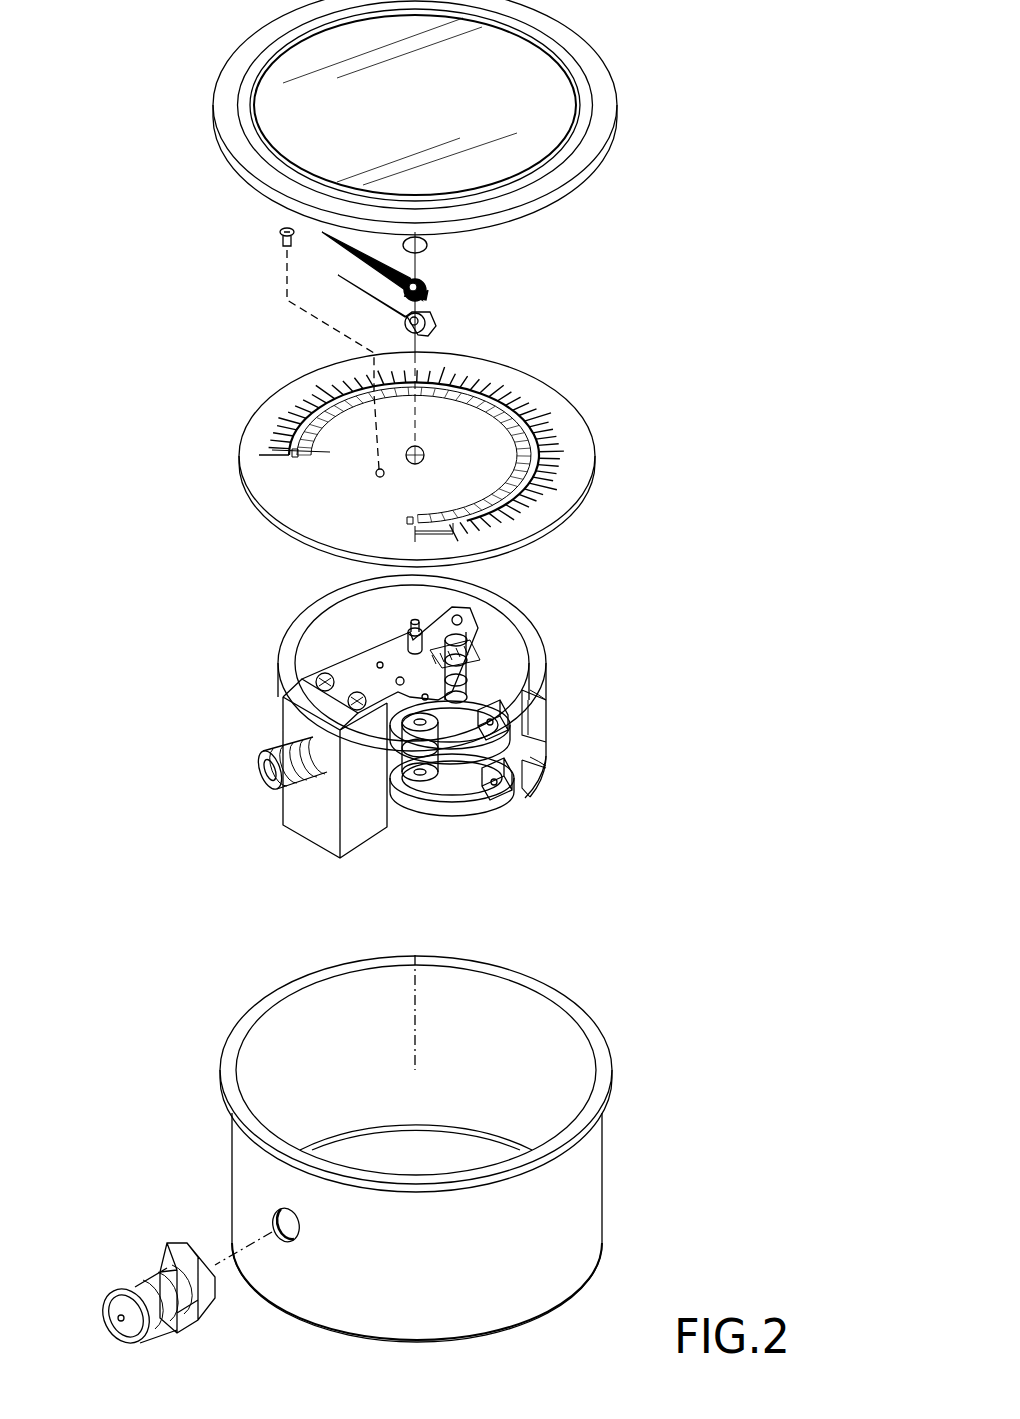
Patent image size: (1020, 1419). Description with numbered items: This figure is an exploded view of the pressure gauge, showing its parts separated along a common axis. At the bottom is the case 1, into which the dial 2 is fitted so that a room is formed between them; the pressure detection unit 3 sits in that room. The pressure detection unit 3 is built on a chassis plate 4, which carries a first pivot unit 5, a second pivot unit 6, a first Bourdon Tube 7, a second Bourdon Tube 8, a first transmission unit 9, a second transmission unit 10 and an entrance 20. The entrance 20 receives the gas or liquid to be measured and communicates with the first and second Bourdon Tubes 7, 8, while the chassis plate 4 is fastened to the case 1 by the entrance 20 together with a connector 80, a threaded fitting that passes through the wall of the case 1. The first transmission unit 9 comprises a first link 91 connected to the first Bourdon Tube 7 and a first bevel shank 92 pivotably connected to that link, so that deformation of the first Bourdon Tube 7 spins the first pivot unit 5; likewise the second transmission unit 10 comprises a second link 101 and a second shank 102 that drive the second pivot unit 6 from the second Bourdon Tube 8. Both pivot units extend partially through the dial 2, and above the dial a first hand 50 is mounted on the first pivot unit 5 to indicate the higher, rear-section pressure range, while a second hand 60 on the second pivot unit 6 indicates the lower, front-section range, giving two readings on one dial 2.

The case 1 is at (612, 1130).
The dial 2 is at (540, 390).
The pressure detection unit 3 is at (441, 734).
The chassis plate 4 is at (336, 672).
The first pivot unit 5 is at (400, 640).
The second pivot unit 6 is at (400, 618).
The first Bourdon Tube 7 is at (535, 632).
The second Bourdon Tube 8 is at (548, 766).
The first transmission unit 9 is at (594, 793).
The first link 91 is at (492, 738).
The first bevel shank 92 is at (470, 788).
The second transmission unit 10 is at (489, 807).
The second link 101 is at (493, 790).
The second shank 102 is at (489, 801).
The entrance 20 is at (260, 764).
The first hand 50 is at (433, 320).
The second hand 60 is at (437, 285).
The connector 80 is at (130, 1276).